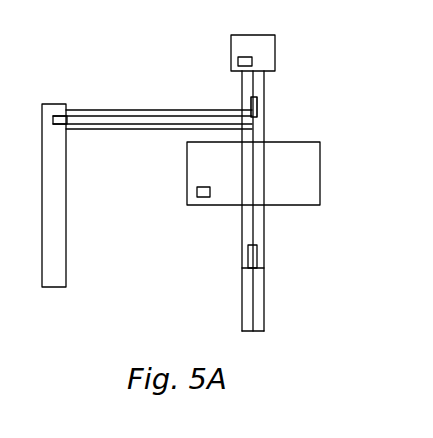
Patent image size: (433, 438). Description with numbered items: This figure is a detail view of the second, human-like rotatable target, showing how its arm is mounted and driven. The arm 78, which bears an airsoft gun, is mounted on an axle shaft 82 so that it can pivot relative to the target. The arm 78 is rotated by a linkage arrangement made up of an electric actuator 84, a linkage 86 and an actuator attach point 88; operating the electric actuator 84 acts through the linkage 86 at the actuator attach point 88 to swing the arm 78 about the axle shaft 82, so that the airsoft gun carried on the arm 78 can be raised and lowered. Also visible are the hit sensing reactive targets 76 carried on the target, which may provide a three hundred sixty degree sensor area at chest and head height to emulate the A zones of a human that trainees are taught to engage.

The hit sensing reactive target 76 is at (252, 61).
The arm 78 is at (114, 107).
The axle shaft 82 is at (147, 117).
The electric actuator 84 is at (264, 307).
The linkage 86 is at (254, 215).
The actuator attach point 88 is at (258, 107).